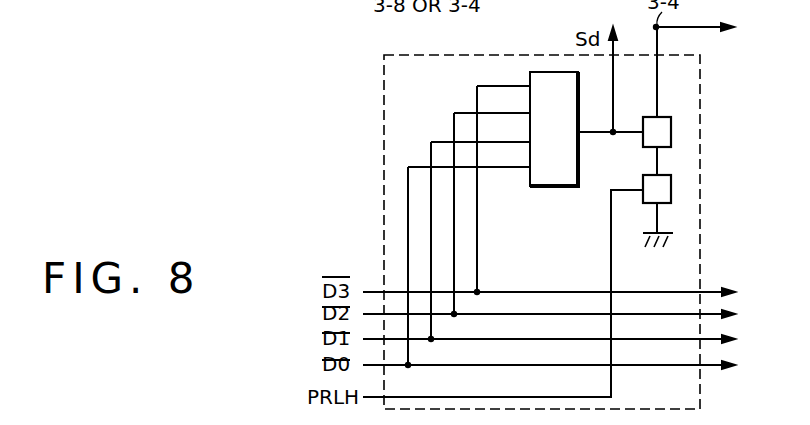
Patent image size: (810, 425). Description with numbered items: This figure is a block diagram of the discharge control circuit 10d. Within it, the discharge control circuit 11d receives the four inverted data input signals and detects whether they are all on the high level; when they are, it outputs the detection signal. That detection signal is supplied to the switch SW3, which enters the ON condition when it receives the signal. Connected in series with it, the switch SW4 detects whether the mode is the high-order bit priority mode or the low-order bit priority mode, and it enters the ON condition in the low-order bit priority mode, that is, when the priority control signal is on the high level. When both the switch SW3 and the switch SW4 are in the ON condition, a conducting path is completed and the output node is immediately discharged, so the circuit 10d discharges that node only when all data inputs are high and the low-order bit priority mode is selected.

The discharge control circuit 10d is at (384, 190).
The discharge control circuit 11d is at (553, 186).
The switch SW3 is at (671, 134).
The switch SW4 is at (671, 190).